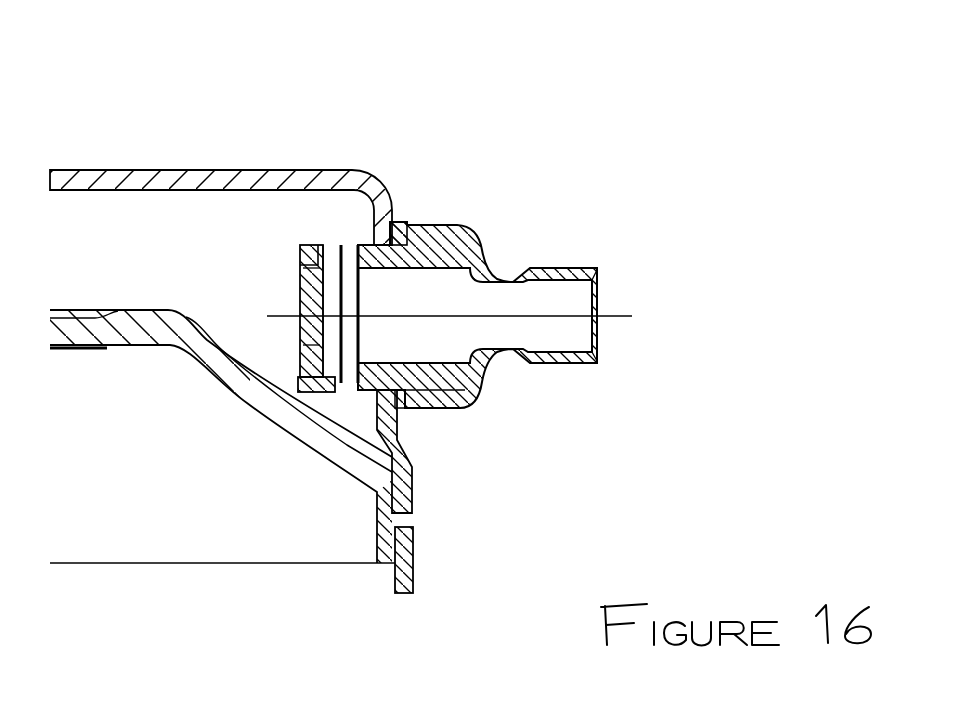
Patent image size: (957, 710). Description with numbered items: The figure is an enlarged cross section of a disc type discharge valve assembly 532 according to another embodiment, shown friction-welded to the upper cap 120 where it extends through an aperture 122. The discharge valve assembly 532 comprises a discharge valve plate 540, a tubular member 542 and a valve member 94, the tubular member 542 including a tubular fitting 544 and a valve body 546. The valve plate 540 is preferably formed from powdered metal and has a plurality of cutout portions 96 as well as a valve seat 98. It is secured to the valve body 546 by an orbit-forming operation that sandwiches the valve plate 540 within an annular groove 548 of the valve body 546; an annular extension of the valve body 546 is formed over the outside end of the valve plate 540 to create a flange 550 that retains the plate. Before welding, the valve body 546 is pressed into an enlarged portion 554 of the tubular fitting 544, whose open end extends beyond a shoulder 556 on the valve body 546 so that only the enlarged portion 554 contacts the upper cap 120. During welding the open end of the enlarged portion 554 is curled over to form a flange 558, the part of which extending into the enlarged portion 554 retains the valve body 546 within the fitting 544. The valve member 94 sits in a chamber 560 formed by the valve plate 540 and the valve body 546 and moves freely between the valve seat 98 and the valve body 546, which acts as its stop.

The discharge valve assembly 532 is at (655, 66).
The upper cap 120 is at (208, 168).
The aperture 122 is at (366, 249).
The flange 558 is at (403, 221).
The enlarged portion 554 is at (435, 227).
The tubular fitting 544 is at (547, 264).
The tubular member 542 is at (672, 398).
The flange 550 is at (297, 250).
The cutout portions 96 is at (300, 268).
The discharge valve plate 540 is at (298, 292).
The valve seat 98 is at (325, 280).
The valve member 94 is at (314, 346).
The annular groove 548 is at (301, 388).
The chamber 560 is at (335, 378).
The valve body 546 is at (455, 400).
The shoulder 556 is at (433, 402).